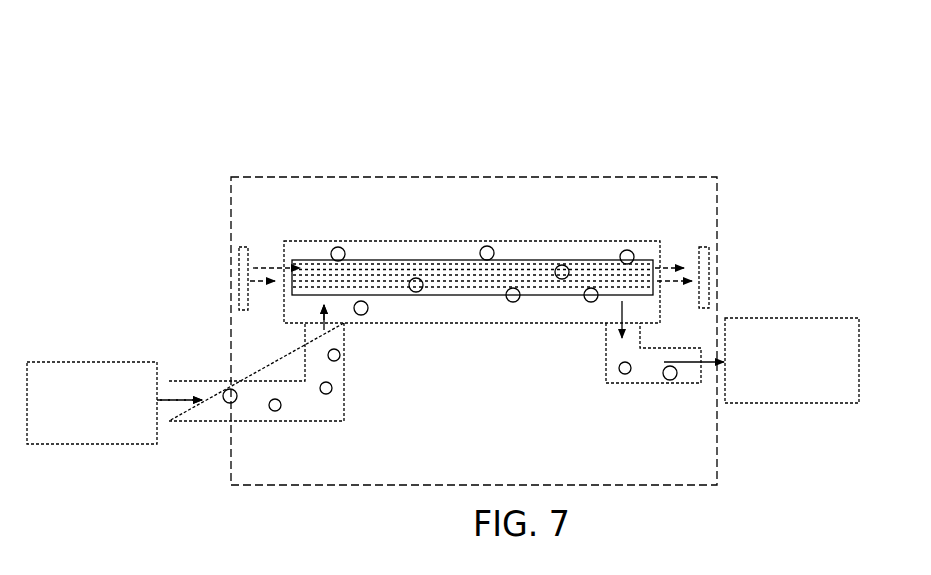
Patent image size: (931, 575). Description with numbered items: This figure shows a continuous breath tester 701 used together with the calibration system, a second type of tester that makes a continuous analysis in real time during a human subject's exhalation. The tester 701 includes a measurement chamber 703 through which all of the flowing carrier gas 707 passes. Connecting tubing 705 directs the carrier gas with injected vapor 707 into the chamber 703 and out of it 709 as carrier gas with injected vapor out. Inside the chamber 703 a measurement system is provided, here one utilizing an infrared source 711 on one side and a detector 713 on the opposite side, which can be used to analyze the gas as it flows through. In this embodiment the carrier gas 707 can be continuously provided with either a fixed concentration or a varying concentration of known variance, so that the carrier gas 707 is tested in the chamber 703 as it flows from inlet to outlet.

The breath tester 701 is at (493, 80).
The measurement chamber 703 is at (502, 323).
The connecting tubing 705 is at (345, 383).
The carrier gas 707 is at (92, 362).
The gas outlet 709 is at (795, 318).
The infrared source 711 is at (244, 247).
The detector 713 is at (703, 247).